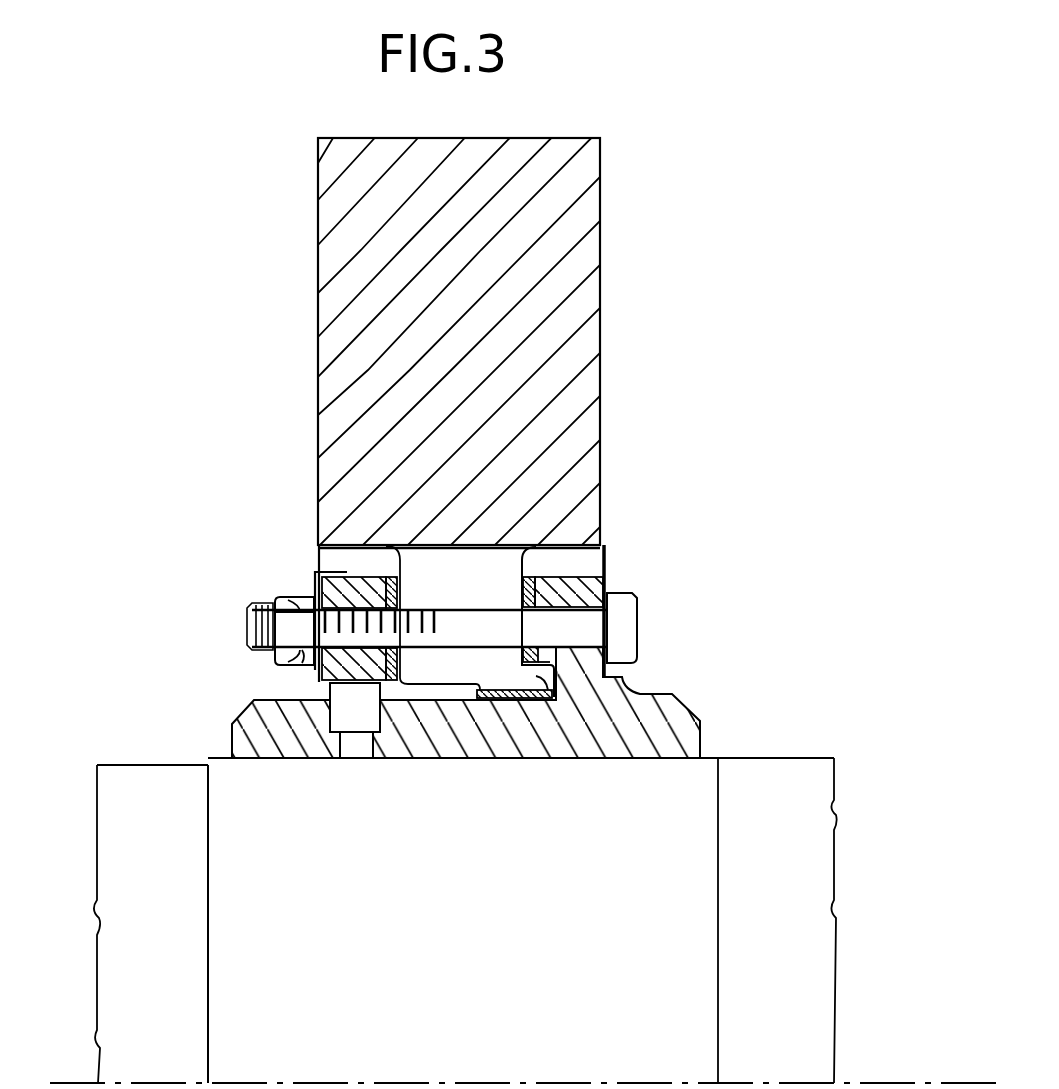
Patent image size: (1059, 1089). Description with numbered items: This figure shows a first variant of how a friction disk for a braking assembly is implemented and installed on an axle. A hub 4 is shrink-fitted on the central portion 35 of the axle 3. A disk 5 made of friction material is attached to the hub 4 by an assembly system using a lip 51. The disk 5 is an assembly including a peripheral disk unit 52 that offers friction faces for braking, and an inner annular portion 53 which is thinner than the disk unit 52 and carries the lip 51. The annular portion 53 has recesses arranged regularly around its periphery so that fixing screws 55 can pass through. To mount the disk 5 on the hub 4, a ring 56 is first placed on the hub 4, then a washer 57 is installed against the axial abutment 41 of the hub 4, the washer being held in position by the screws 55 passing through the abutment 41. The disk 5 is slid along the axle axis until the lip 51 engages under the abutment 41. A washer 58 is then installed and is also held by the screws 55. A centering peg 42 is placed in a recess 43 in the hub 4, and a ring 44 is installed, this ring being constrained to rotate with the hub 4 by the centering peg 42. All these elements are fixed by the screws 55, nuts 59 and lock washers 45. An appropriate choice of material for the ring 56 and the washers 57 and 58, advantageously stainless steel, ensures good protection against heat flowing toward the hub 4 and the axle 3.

The axle 3 is at (140, 790).
The central portion of the axle 35 is at (235, 798).
The hub 4 is at (650, 717).
The axial abutment 41 is at (575, 596).
The centering peg 42 is at (346, 718).
The recess 43 is at (357, 742).
The ring 44 is at (350, 594).
The lock washer 45 is at (298, 614).
The disk 5 is at (299, 318).
The lip 51 is at (553, 700).
The peripheral disk unit 52 is at (538, 344).
The inner annular portion 53 is at (600, 498).
The fixing screw 55 is at (625, 626).
The ring 56 is at (505, 695).
The washer 57 is at (530, 570).
The washer 58 is at (388, 580).
The nut 59 is at (298, 660).